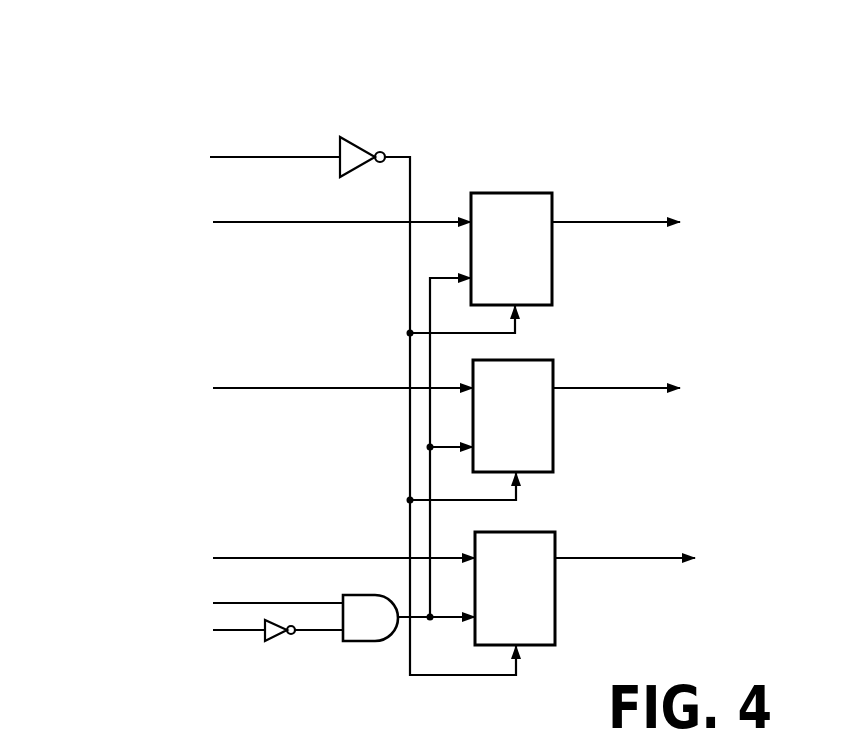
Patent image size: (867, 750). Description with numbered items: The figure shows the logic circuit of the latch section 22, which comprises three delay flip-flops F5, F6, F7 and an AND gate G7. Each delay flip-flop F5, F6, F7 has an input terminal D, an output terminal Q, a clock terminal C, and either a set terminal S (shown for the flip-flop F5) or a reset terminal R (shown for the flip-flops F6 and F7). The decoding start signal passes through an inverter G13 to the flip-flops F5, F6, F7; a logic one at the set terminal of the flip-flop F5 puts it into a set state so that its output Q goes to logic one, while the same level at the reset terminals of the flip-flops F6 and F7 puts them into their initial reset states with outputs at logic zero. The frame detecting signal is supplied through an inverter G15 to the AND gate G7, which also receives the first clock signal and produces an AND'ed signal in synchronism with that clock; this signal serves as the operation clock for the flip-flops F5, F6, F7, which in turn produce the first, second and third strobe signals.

The latch section 22 is at (468, 128).
The inverter G13 is at (357, 137).
The delay flip-flop F5 is at (500, 193).
The delay flip-flop F6 is at (553, 361).
The delay flip-flop F7 is at (555, 533).
The AND gate G7 is at (372, 645).
The inverter G15 is at (276, 645).